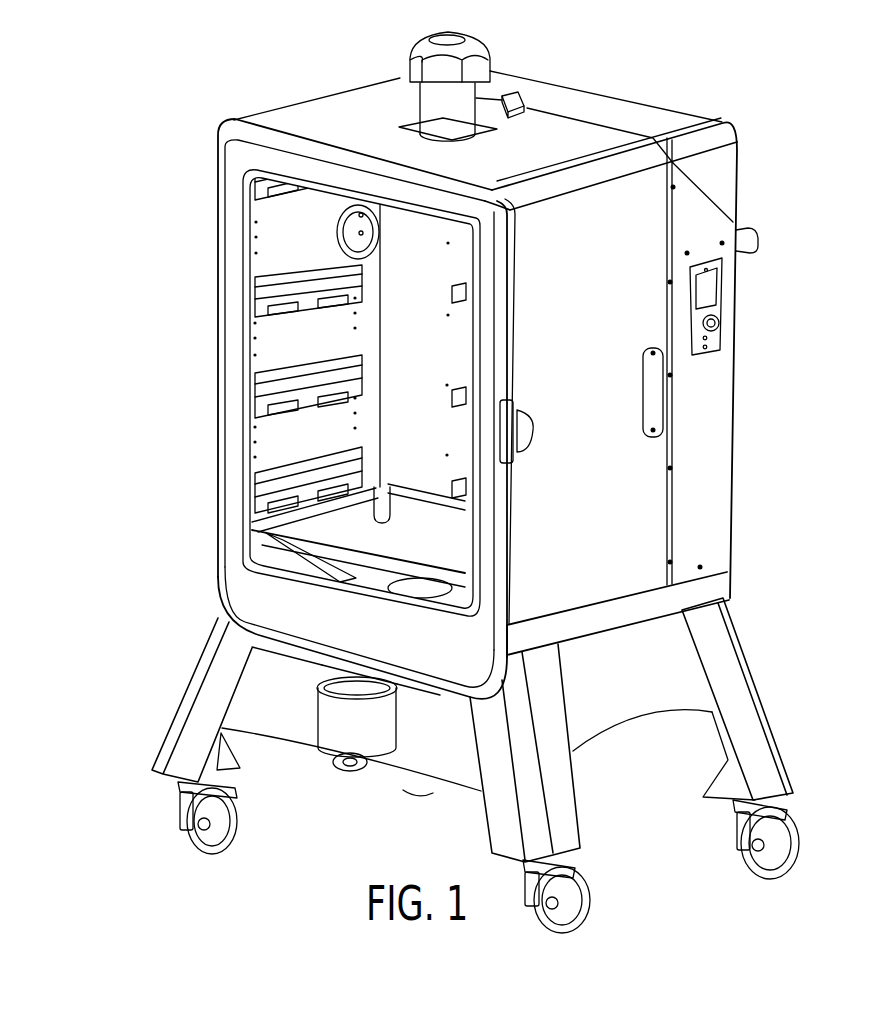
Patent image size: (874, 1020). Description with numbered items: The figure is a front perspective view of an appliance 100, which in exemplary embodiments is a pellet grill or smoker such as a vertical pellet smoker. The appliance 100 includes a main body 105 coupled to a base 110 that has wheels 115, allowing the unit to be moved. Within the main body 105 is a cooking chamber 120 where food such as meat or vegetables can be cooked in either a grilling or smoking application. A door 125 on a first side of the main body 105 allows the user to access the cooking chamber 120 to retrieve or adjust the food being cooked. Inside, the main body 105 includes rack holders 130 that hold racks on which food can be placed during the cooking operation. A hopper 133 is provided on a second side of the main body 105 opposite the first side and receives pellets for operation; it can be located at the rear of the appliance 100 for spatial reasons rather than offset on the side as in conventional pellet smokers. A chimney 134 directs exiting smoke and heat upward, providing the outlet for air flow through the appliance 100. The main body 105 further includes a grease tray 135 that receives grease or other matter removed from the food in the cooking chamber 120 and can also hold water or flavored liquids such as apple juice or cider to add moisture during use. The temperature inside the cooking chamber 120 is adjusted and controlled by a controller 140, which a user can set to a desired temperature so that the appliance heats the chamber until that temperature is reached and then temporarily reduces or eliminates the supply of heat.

The appliance 100 is at (96, 133).
The main body 105 is at (300, 97).
The base 110 is at (770, 769).
The wheels 115 is at (192, 828).
The cooking chamber 120 is at (430, 366).
The door 125 is at (234, 394).
The rack holders 130 is at (250, 304).
The hopper 133 is at (727, 170).
The chimney 134 is at (487, 43).
The grease tray 135 is at (262, 536).
The controller 140 is at (320, 717).